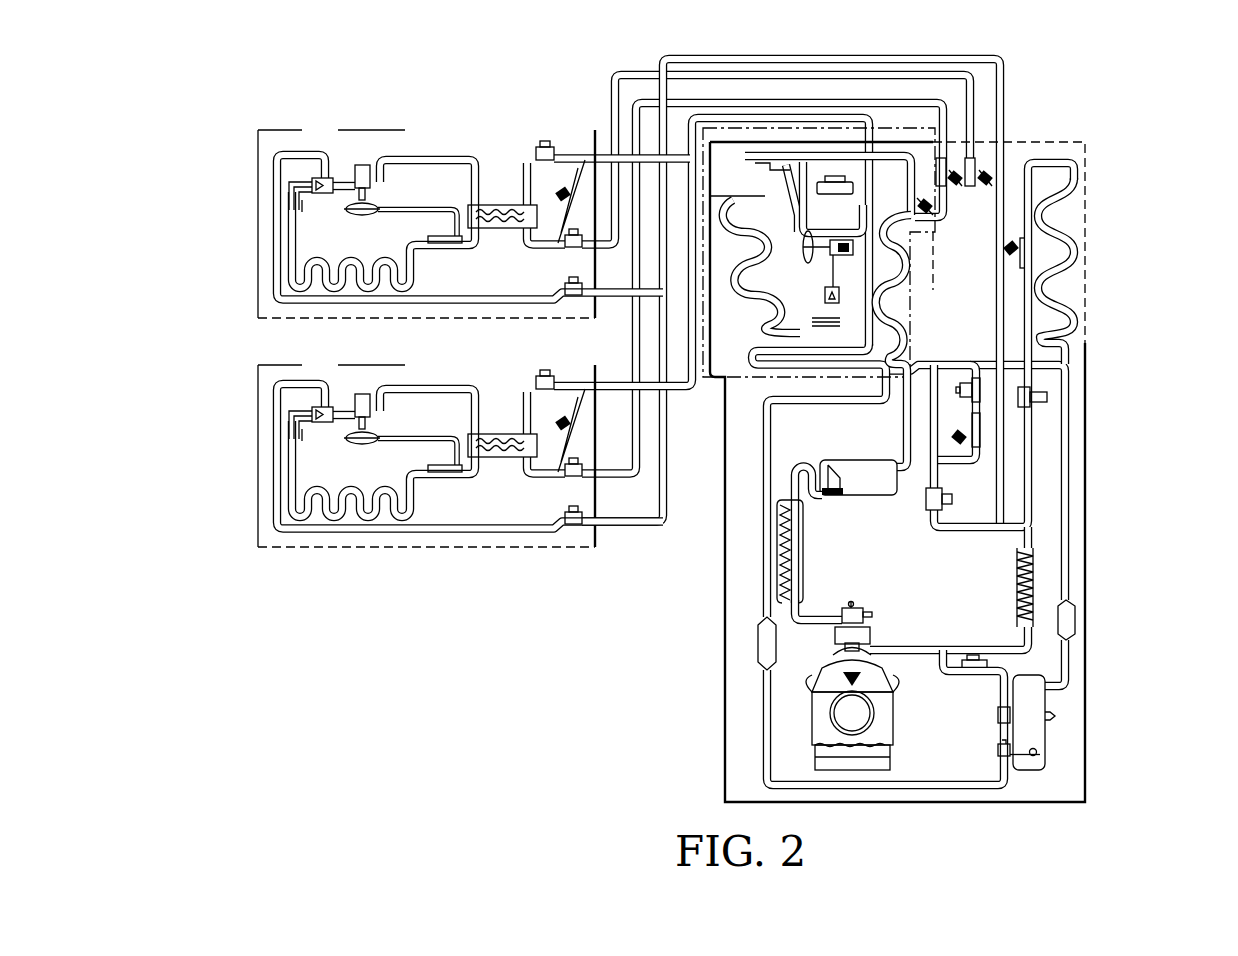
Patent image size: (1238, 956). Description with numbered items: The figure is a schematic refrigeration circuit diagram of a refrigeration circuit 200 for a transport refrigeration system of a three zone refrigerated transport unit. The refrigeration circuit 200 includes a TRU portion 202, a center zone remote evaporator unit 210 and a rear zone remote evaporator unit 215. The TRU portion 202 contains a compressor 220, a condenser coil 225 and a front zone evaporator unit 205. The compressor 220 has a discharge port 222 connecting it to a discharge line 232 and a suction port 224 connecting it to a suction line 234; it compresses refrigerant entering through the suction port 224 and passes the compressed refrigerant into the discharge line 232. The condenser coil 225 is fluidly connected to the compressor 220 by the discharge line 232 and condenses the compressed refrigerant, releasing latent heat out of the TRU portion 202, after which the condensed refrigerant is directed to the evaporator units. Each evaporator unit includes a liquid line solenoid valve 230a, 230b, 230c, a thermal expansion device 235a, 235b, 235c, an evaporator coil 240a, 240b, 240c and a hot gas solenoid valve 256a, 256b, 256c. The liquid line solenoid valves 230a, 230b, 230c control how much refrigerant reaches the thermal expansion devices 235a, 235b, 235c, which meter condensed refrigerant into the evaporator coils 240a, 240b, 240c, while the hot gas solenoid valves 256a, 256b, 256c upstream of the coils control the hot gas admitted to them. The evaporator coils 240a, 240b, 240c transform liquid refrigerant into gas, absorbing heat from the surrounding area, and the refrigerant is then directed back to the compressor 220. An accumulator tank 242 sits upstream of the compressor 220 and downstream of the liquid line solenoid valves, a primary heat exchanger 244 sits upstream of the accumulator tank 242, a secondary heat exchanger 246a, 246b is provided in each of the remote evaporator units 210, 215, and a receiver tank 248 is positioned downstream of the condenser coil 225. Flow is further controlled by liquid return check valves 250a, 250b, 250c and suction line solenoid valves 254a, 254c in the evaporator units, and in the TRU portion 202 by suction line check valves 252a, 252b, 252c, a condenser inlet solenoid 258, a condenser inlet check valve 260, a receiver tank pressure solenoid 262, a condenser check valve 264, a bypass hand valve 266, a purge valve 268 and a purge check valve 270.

The refrigeration circuit 200 is at (150, 88).
The TRU portion 202 is at (1086, 478).
The front zone evaporator unit 205 is at (710, 381).
The center zone remote evaporator unit 210 is at (283, 127).
The rear zone remote evaporator unit 215 is at (278, 363).
The compressor 220 is at (894, 738).
The discharge port 222 is at (856, 640).
The suction port 224 is at (860, 610).
The condenser coil 225 is at (1070, 272).
The liquid line solenoid valve 230a is at (882, 172).
The liquid line solenoid valve 230b is at (545, 141).
The liquid line solenoid valve 230c is at (545, 355).
The discharge line 232 is at (964, 656).
The suction line 234 is at (822, 613).
The thermal expansion device 235a is at (855, 252).
The thermal expansion device 235b is at (362, 164).
The thermal expansion device 235c is at (369, 383).
The evaporator coil 240a is at (734, 199).
The evaporator coil 240b is at (388, 476).
The evaporator coil 240c is at (410, 290).
The accumulator tank 242 is at (862, 462).
The primary heat exchanger 244 is at (908, 296).
The secondary heat exchanger 246a is at (500, 230).
The secondary heat exchanger 246b is at (502, 468).
The receiver tank 248 is at (1043, 700).
The liquid return check valve 250a is at (838, 176).
The liquid return check valve 250b is at (558, 190).
The liquid return check valve 250c is at (552, 505).
The suction line check valve 252a is at (935, 213).
The suction line check valve 252b is at (992, 184).
The suction line check valve 252c is at (960, 170).
The suction line solenoid valve 254a is at (578, 228).
The suction line solenoid valve 254c is at (643, 470).
The hot gas solenoid valve 256a is at (927, 503).
The hot gas solenoid valve 256b is at (576, 298).
The hot gas solenoid valve 256c is at (622, 544).
The condenser inlet solenoid 258 is at (1047, 395).
The condenser inlet check valve 260 is at (1004, 252).
The receiver tank pressure solenoid 262 is at (975, 678).
The condenser check valve 264 is at (1076, 614).
The bypass hand valve 266 is at (1000, 724).
The purge valve 268 is at (958, 384).
The purge check valve 270 is at (981, 432).